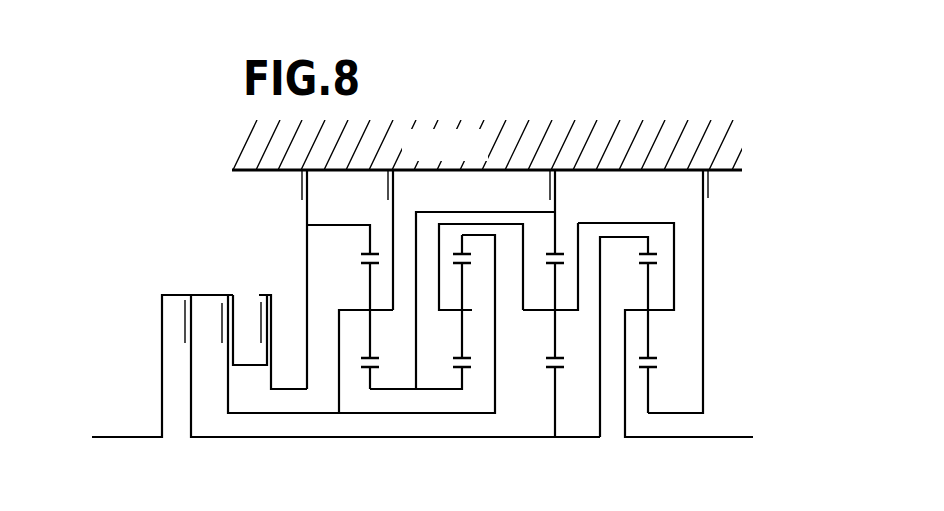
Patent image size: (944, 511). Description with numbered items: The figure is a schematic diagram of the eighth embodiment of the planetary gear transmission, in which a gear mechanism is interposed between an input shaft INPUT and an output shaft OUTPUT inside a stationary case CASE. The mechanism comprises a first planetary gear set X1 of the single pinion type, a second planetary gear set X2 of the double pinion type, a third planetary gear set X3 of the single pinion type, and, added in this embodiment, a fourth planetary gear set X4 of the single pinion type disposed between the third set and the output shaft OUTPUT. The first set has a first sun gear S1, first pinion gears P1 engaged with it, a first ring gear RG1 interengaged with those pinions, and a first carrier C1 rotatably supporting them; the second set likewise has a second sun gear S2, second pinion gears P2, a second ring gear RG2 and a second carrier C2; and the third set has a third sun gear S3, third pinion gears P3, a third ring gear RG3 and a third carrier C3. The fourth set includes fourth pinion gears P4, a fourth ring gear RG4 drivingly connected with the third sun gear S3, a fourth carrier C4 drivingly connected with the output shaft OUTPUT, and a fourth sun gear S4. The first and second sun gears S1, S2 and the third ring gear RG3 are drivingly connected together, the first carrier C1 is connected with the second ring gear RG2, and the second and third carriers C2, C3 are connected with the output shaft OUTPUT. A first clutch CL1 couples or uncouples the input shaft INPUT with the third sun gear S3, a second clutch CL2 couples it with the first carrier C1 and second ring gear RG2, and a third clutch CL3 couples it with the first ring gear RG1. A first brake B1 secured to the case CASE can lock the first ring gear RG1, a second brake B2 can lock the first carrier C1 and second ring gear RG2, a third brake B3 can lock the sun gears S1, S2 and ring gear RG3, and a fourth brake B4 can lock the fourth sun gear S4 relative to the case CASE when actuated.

The case CASE is at (494, 145).
The input shaft INPUT is at (127, 437).
The output shaft OUTPUT is at (714, 437).
The first clutch CL1 is at (383, 351).
The second clutch CL2 is at (230, 293).
The third clutch CL3 is at (278, 327).
The first brake B1 is at (285, 187).
The second brake B2 is at (410, 240).
The third brake B3 is at (571, 187).
The fourth brake B4 is at (694, 291).
The first ring gear RG1 is at (368, 245).
The second ring gear RG2 is at (463, 240).
The third ring gear RG3 is at (555, 242).
The fourth ring gear RG4 is at (650, 244).
The first carrier C1 is at (361, 308).
The second carrier C2 is at (458, 312).
The third carrier C3 is at (544, 311).
The fourth carrier C4 is at (637, 308).
The first pinion gears P1 is at (370, 338).
The second pinion gears P2 is at (461, 340).
The third pinion gears P3 is at (553, 340).
The fourth pinion gears P4 is at (650, 339).
The first sun gear S1 is at (370, 374).
The second sun gear S2 is at (463, 374).
The third sun gear S3 is at (556, 374).
The fourth sun gear S4 is at (650, 374).
The first planetary gear set X1 is at (363, 374).
The second planetary gear set X2 is at (455, 376).
The third planetary gear set X3 is at (548, 376).
The fourth planetary gear set X4 is at (641, 376).